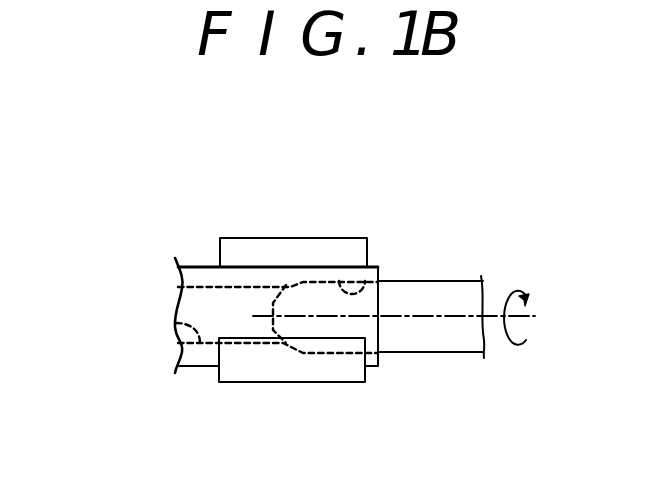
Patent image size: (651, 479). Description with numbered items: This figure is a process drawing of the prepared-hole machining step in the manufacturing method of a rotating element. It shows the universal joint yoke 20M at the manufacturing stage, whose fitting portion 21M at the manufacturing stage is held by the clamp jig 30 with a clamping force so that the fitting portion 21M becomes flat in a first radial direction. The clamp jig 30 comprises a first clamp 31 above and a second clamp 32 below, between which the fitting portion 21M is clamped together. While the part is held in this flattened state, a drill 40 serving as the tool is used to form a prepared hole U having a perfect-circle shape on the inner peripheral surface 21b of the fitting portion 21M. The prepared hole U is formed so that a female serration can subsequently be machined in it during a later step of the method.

The universal joint yoke at the manufacturing stage 20M is at (172, 278).
The fitting portion at the manufacturing stage 21M is at (279, 266).
The inner peripheral surface 21b is at (176, 324).
The clamp jig 30 is at (253, 317).
The first clamp 31 is at (341, 244).
The second clamp 32 is at (251, 370).
The drill 40 is at (463, 279).
The prepared hole U is at (366, 274).